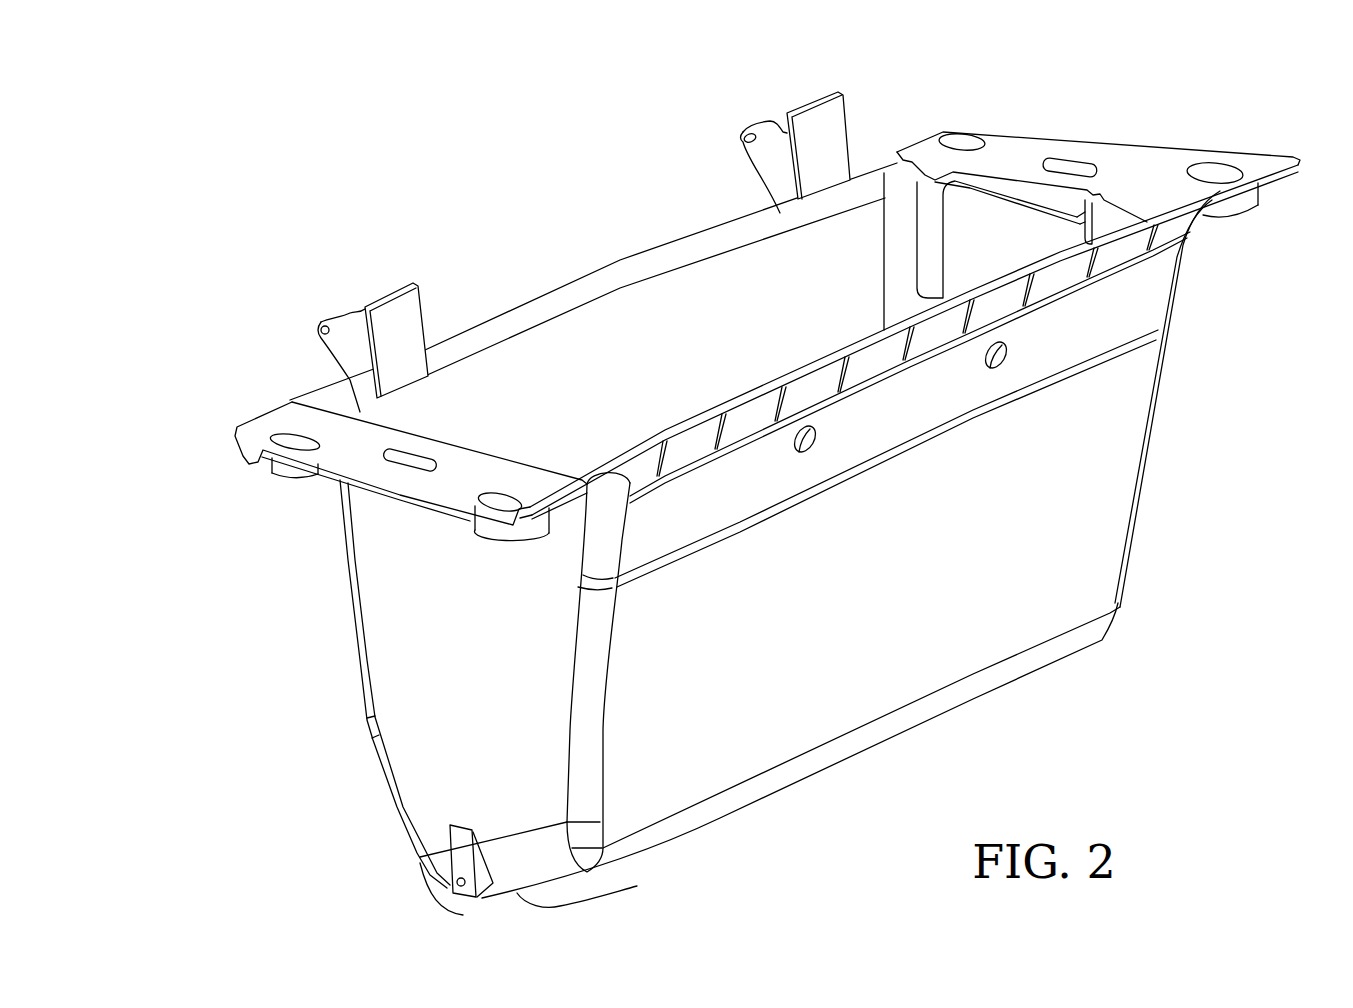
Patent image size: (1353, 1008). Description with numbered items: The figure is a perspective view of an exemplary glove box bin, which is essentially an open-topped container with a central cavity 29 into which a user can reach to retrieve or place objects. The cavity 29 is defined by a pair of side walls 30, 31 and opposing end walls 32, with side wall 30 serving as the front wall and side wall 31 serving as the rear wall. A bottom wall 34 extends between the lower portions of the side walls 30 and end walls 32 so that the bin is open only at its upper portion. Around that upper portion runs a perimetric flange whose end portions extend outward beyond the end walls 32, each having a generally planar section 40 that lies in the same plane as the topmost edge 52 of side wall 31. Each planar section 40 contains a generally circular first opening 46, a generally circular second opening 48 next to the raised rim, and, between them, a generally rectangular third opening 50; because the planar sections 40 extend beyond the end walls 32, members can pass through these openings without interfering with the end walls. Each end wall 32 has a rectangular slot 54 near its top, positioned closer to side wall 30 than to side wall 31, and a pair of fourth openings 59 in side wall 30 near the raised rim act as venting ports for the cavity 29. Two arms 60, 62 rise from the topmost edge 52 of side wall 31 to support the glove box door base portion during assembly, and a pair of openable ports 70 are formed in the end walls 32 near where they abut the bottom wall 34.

The central cavity 29 is at (745, 272).
The side wall 30 is at (955, 638).
The side wall 31 is at (653, 334).
The end wall 32 is at (430, 724).
The bottom wall 34 is at (637, 887).
The planar section 40 is at (340, 443).
The first opening 46 is at (293, 450).
The second opening 48 is at (500, 503).
The third opening 50 is at (397, 457).
The topmost edge 52 is at (550, 320).
The slot 54 is at (1103, 222).
The fourth opening 59 is at (997, 357).
The arm 60 is at (393, 320).
The arm 62 is at (808, 138).
The openable port 70 is at (480, 902).